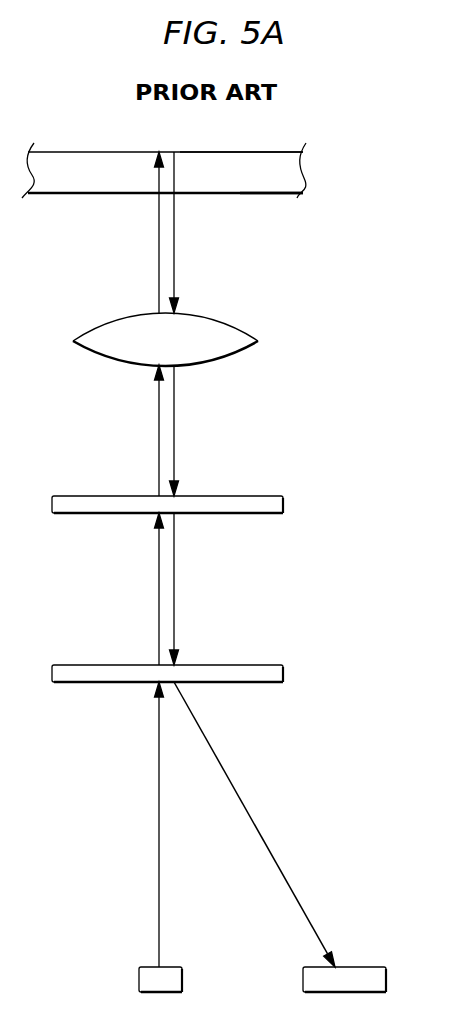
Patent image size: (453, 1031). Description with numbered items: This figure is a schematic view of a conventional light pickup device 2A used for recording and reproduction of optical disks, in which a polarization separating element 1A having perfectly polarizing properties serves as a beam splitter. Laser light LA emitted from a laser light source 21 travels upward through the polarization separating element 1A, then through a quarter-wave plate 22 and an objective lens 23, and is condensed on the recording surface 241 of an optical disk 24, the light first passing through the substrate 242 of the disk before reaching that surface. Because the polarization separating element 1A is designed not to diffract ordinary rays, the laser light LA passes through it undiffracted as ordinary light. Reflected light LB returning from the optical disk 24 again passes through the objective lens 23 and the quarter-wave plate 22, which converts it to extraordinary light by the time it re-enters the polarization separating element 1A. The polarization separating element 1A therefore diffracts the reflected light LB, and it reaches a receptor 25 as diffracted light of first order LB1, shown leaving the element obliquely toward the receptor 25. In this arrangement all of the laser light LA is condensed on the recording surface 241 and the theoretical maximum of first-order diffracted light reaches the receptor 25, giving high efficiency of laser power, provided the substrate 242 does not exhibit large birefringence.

The optical disk 24 is at (53, 156).
The recording surface 241 is at (242, 164).
The substrate 242 is at (299, 172).
The light pickup device 2A is at (371, 199).
The reflected light LB is at (183, 228).
The objective lens 23 is at (243, 347).
The quarter-wave plate 22 is at (284, 505).
The polarization separating element 1A is at (284, 672).
The laser light LA is at (150, 895).
The diffracted light of first order LB1 is at (255, 810).
The laser light source 21 is at (139, 981).
The receptor 25 is at (303, 981).